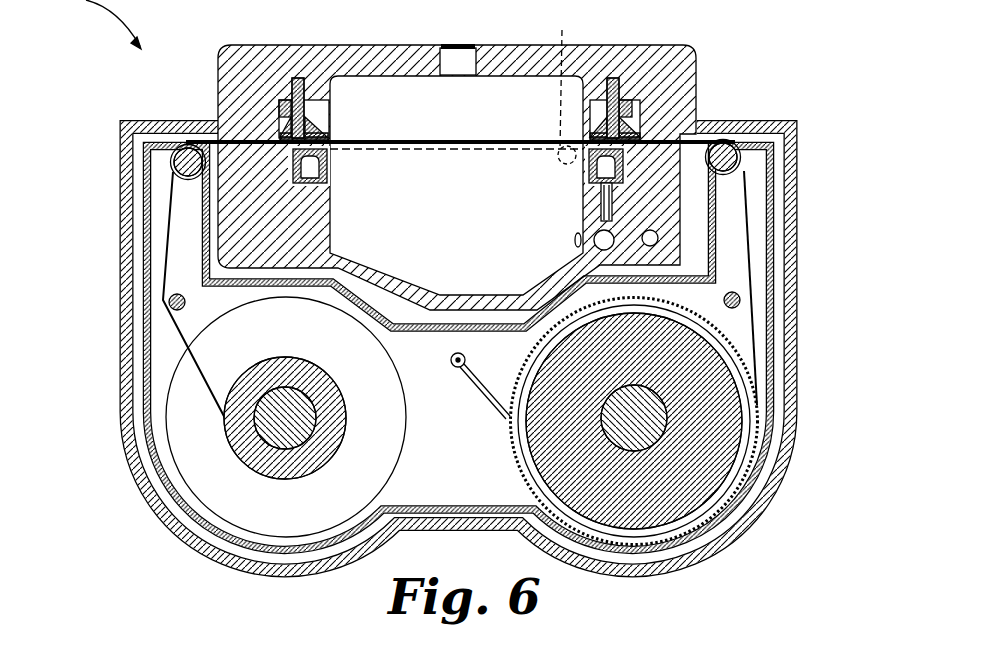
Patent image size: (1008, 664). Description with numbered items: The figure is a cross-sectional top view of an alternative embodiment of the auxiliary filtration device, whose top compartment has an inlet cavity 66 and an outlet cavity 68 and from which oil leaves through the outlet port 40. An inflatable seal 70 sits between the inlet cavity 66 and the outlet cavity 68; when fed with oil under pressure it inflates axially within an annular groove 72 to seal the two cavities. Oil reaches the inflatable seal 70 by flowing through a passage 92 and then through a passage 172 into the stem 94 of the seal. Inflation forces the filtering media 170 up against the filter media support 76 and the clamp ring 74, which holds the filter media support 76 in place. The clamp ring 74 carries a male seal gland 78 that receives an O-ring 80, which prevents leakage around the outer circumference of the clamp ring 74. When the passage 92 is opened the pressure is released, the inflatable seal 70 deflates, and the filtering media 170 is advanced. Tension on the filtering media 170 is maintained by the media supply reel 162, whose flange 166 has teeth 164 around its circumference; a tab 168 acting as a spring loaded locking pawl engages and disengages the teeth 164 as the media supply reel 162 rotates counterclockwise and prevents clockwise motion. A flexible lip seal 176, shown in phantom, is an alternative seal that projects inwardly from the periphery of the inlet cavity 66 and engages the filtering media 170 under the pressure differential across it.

The outlet port 40 is at (576, 234).
The inlet cavity 66 is at (513, 161).
The outlet cavity 68 is at (386, 100).
The inflatable seal 70 is at (643, 147).
The annular groove 72 is at (693, 72).
The clamp ring 74 is at (630, 100).
The filter media support 76 is at (346, 140).
The male seal gland 78 is at (280, 117).
The O-ring 80 is at (282, 123).
The passage 92 is at (683, 267).
The stem 94 is at (697, 162).
The media supply reel 162 is at (700, 417).
The teeth 164 is at (516, 458).
The flange 166 is at (710, 507).
The tab 168 is at (507, 400).
The filtering media 170 is at (748, 324).
The passage 172 is at (615, 226).
The flexible lip seal 176 is at (571, 86).